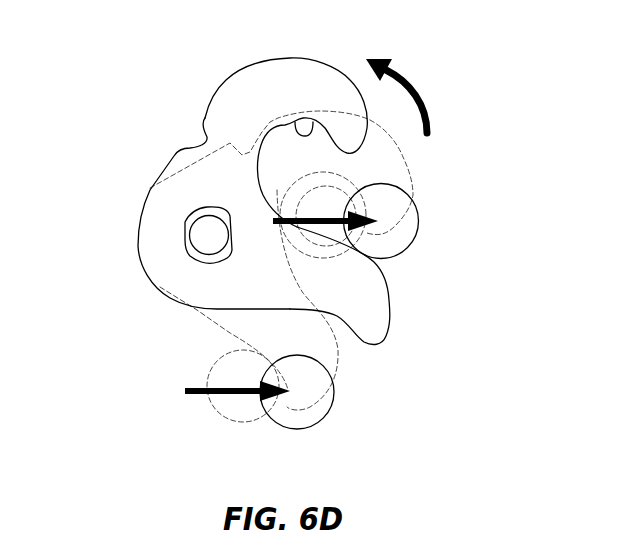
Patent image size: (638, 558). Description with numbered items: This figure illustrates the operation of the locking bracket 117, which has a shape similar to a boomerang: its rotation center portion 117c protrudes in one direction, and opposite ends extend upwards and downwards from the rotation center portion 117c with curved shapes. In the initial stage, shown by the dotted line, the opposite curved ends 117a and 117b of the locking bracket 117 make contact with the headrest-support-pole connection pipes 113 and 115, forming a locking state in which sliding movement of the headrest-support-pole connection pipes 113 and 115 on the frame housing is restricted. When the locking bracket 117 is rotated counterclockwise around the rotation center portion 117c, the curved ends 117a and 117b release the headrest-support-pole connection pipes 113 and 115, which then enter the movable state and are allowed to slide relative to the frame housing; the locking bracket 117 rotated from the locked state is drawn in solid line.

The headrest-support-pole connection pipe 113 is at (330, 412).
The headrest-support-pole connection pipe 115 is at (420, 228).
The locking bracket 117 is at (177, 283).
The curved end 117a is at (360, 342).
The curved end 117b is at (295, 121).
The rotation center portion 117c is at (210, 233).